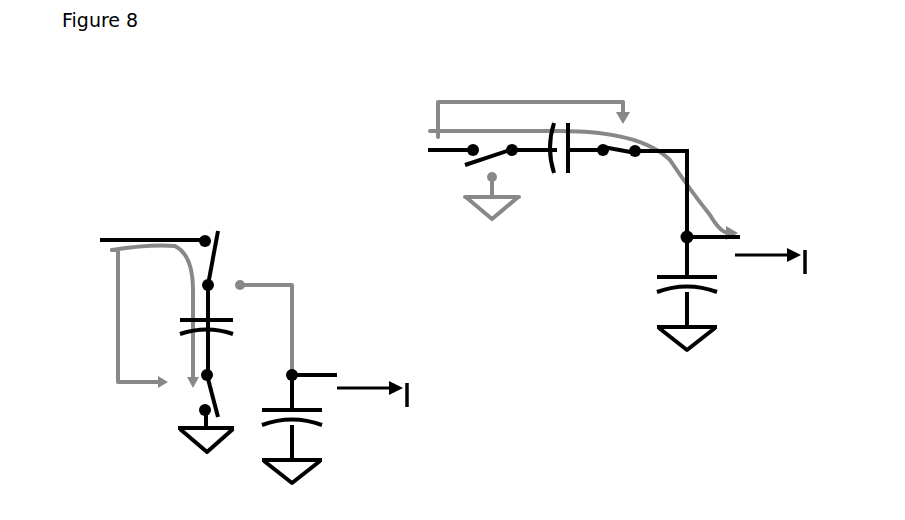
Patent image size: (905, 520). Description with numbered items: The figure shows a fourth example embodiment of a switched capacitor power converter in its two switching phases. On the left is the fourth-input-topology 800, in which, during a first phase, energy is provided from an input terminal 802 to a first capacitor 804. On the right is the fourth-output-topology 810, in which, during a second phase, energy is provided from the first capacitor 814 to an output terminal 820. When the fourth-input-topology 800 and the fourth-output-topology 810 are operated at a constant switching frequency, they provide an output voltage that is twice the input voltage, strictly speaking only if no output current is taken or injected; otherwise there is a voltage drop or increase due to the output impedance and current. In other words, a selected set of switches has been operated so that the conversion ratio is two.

The fourth-input-topology 800 is at (111, 433).
The input terminal 802 is at (200, 238).
The first capacitor 804 is at (219, 317).
The fourth-output-topology 810 is at (755, 88).
The first capacitor 814 is at (571, 163).
The output terminal 820 is at (680, 242).